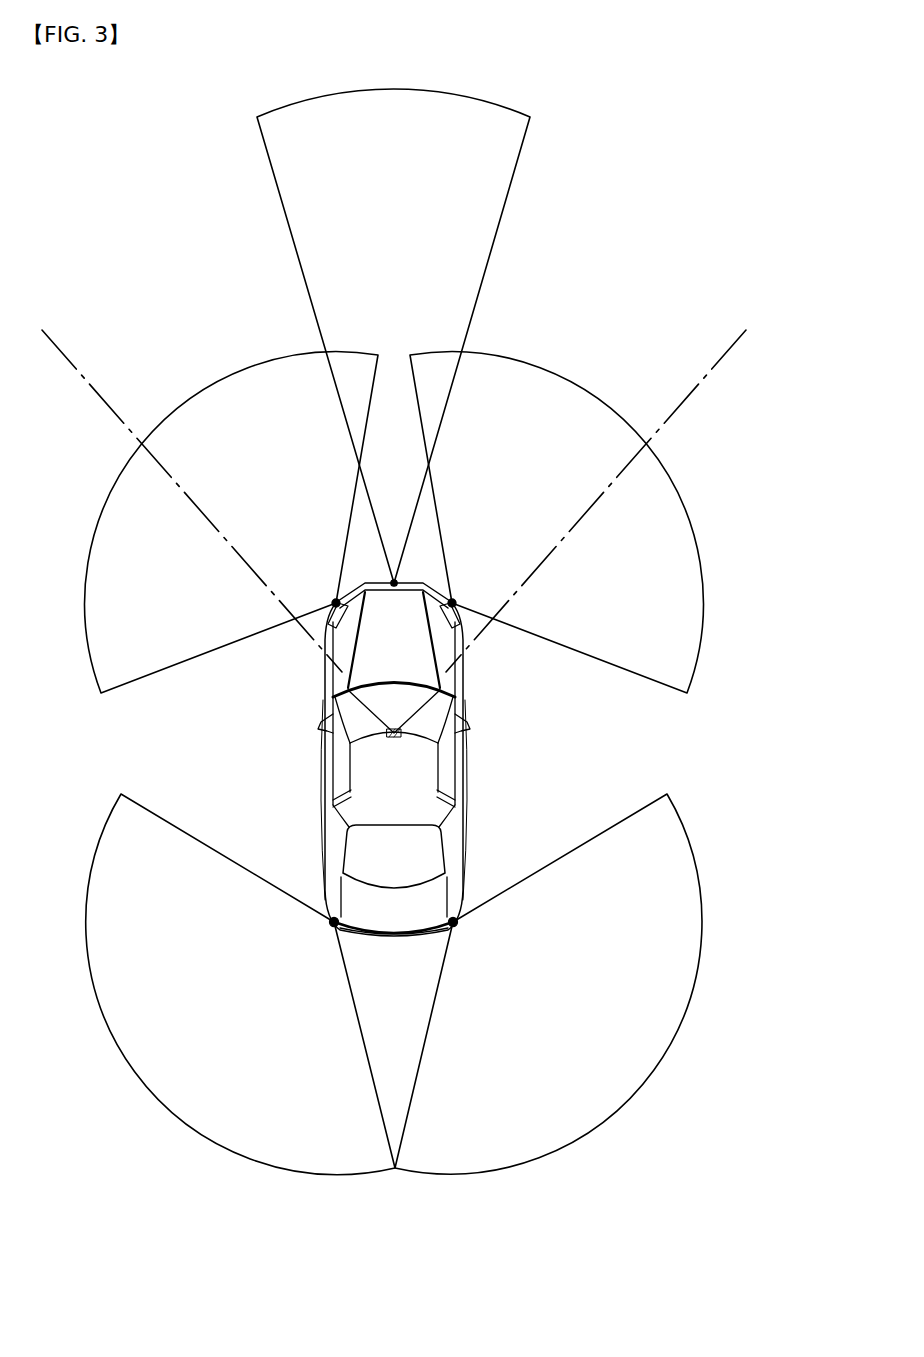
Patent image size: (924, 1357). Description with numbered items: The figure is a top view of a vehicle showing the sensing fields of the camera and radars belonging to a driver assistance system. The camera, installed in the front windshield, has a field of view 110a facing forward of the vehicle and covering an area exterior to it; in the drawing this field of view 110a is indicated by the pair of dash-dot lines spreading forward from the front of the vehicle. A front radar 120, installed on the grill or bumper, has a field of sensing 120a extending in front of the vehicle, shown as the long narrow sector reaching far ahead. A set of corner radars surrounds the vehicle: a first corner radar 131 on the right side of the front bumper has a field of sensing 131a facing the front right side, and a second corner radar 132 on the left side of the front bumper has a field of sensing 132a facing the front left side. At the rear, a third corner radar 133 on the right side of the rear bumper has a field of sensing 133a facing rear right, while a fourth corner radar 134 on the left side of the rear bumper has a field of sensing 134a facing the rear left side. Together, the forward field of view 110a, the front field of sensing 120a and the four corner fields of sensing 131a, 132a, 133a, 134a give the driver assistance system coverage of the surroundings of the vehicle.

The field of view 110a is at (703, 380).
The front radar 120 is at (394, 583).
The field of sensing 120a is at (478, 223).
The first corner radar 131 is at (452, 603).
The field of sensing 131a is at (584, 405).
The second corner radar 132 is at (336, 603).
The field of sensing 132a is at (204, 405).
The third corner radar 133 is at (453, 925).
The field of sensing 133a is at (656, 1053).
The fourth corner radar 134 is at (334, 925).
The field of sensing 134a is at (132, 1053).